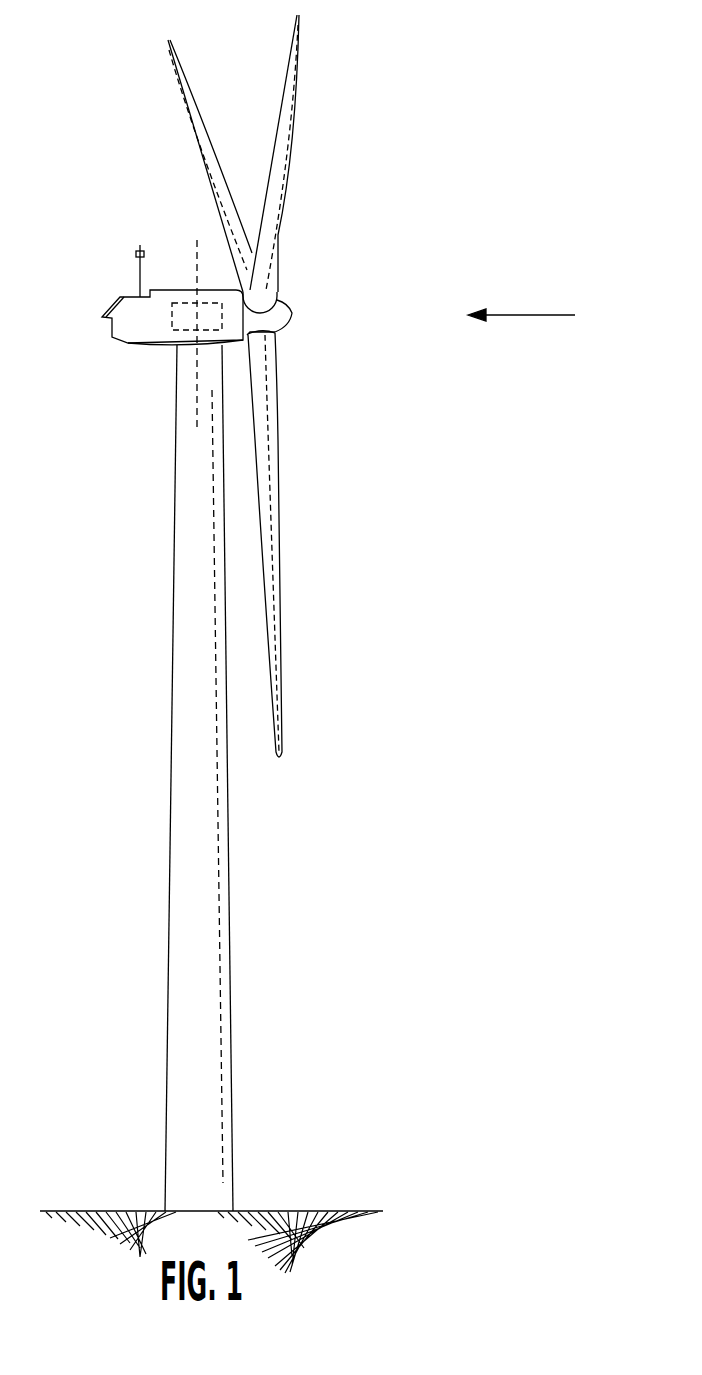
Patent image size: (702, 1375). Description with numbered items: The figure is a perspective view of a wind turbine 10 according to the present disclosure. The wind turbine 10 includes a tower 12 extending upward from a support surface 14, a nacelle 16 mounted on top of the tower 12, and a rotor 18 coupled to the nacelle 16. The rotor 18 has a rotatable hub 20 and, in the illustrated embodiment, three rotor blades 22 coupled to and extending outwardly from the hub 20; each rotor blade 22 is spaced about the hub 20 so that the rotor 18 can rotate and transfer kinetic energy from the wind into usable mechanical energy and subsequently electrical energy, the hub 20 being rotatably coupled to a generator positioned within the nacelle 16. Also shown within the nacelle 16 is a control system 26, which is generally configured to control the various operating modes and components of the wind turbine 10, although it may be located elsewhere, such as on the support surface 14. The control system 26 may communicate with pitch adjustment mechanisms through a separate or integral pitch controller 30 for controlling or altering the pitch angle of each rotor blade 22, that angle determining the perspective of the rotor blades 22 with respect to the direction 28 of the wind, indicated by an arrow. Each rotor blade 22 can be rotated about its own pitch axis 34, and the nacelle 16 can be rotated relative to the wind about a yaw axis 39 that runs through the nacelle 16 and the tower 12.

The wind turbine 10 is at (432, 120).
The tower 12 is at (170, 873).
The support surface 14 is at (143, 1210).
The nacelle 16 is at (148, 345).
The rotor 18 is at (293, 295).
The rotatable hub 20 is at (288, 312).
The rotor blade 22 is at (278, 133).
The control system 26 is at (192, 303).
The direction of the wind 28 is at (518, 315).
The pitch controller 30 is at (309, 404).
The pitch axis 34 is at (210, 183).
The yaw axis 39 is at (197, 397).